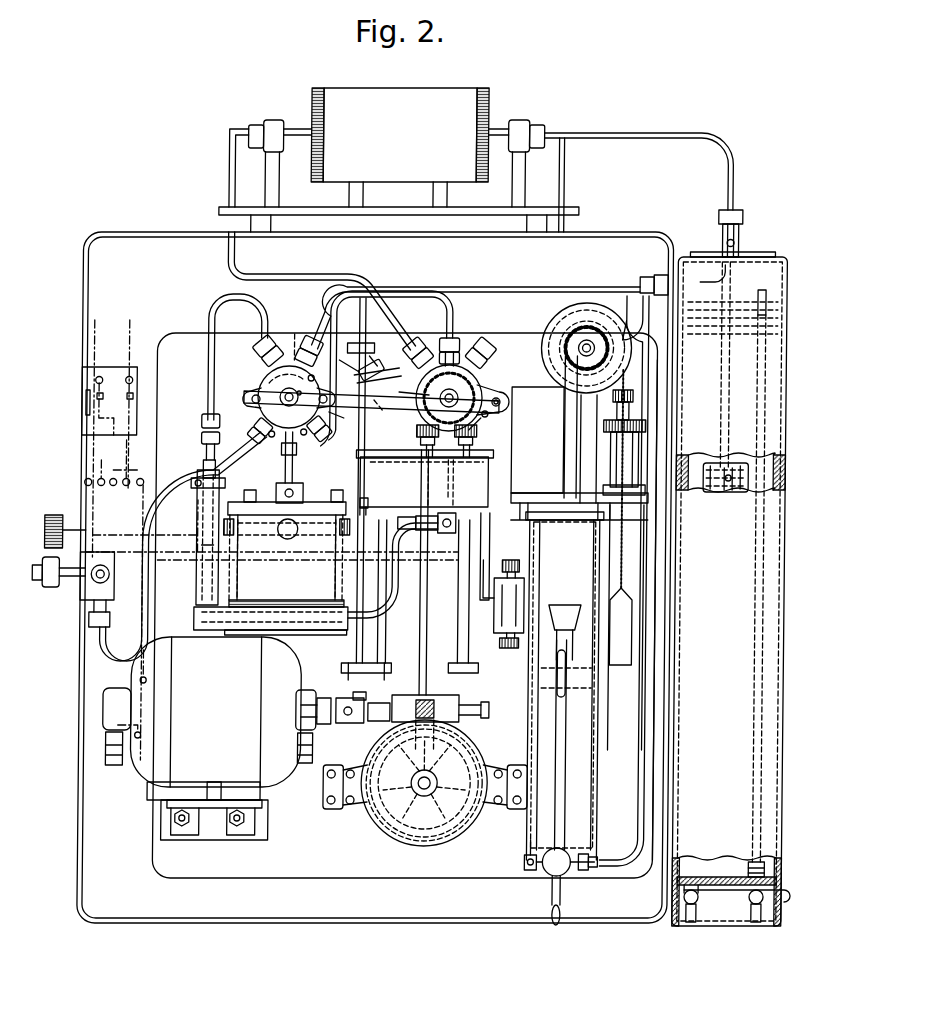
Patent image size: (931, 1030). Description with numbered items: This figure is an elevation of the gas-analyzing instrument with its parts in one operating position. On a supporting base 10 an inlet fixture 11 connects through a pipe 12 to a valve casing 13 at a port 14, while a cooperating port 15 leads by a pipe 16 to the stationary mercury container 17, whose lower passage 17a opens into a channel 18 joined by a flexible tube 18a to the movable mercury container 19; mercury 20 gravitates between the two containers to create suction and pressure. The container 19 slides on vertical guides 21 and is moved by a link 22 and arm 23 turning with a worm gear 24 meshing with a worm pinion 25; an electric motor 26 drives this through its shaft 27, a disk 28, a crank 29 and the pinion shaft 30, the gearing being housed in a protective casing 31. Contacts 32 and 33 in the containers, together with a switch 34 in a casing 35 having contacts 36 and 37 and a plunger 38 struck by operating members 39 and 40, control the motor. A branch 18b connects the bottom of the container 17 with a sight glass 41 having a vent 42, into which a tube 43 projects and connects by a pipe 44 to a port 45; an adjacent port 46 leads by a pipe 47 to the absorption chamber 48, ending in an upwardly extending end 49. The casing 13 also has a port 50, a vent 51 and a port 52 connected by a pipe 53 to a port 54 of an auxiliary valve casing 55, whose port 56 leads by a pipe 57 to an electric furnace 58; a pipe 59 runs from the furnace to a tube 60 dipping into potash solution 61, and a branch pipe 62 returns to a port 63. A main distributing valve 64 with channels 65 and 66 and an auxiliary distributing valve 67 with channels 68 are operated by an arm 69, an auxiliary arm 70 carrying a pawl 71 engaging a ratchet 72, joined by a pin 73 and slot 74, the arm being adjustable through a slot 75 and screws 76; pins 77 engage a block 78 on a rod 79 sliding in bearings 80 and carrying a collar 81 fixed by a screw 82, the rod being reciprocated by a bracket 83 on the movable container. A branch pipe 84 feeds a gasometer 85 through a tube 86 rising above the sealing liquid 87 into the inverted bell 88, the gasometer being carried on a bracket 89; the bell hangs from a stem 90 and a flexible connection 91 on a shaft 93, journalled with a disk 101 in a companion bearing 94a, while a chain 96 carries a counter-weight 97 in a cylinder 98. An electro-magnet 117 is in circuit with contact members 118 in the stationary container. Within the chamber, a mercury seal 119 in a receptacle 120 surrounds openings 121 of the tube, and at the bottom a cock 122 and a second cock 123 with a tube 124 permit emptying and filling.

The supporting base 10 is at (170, 245).
The inlet fixture 11 is at (53, 587).
The pipe 12 is at (200, 478).
The valve casing 13 is at (257, 388).
The port 14 is at (256, 420).
The port 15 is at (263, 441).
The pipe 16 is at (295, 476).
The stationary mercury container 17 is at (286, 557).
The passage 17a is at (290, 604).
The channel 18 is at (250, 635).
The flexible tube 18a is at (372, 616).
The branch 18b is at (197, 612).
The movable mercury container 19 is at (425, 478).
The mercury 20 is at (262, 515).
The vertical guides 21 is at (389, 645).
The link 22 is at (431, 632).
The arm 23 is at (424, 779).
The worm gear 24 is at (486, 748).
The worm pinion 25 is at (438, 700).
The electric motor 26 is at (209, 738).
The motor shaft 27 is at (330, 700).
The disk 28 is at (352, 724).
The crank 29 is at (372, 698).
The pinion shaft 30 is at (404, 705).
The protective casing 31 is at (470, 738).
The electrical contacts 32 is at (246, 525).
The electrical contacts 33 is at (455, 460).
The electric switch 34 is at (528, 594).
The protective casing 35 is at (500, 622).
The switch contact 36 is at (540, 608).
The switch contact 37 is at (497, 605).
The plunger 38 is at (524, 583).
The operating member 39 is at (492, 436).
The operating member 40 is at (497, 596).
The sight glass 41 is at (200, 588).
The vent 42 is at (193, 484).
The tube 43 is at (204, 567).
The pipe 44 is at (210, 367).
The port 45 is at (282, 381).
The port 46 is at (316, 352).
The pipe 47 is at (330, 299).
The absorption chamber 48 is at (787, 490).
The upwardly extending end 49 is at (712, 283).
The port 50 is at (306, 391).
The vent 51 is at (316, 376).
The port 52 is at (330, 430).
The pipe 53 is at (410, 294).
The port 54 is at (458, 342).
The auxiliary valve casing 55 is at (522, 400).
The port 56 is at (420, 346).
The pipe 57 is at (285, 276).
The electric furnace 58 is at (399, 160).
The pipe 59 is at (624, 136).
The tube 60 is at (724, 396).
The potash solution 61 is at (748, 298).
The branch pipe 62 is at (563, 190).
The port 63 is at (492, 363).
The main distributing valve 64 is at (265, 372).
The channel 65 is at (312, 440).
The channel 66 is at (292, 338).
The auxiliary distributing valve 67 is at (503, 406).
The channels 68 is at (500, 394).
The arm 69 is at (253, 398).
The auxiliary arm 70 is at (371, 402).
The pawl 71 is at (413, 390).
The ratchet 72 is at (482, 420).
The pin 73 is at (377, 375).
The slot 74 is at (381, 364).
The slot 75 is at (351, 358).
The screws 76 is at (338, 419).
The pins 77 is at (372, 382).
The block 78 is at (384, 411).
The rod 79 is at (360, 322).
The bearings 80 is at (368, 343).
The collar 81 is at (362, 506).
The screw 82 is at (368, 502).
The bracket 83 is at (418, 430).
The branch pipe 84 is at (642, 338).
The gasometer 85 is at (602, 781).
The tube 86 is at (560, 775).
The sealing liquid 87 is at (570, 670).
The inverted bell 88 is at (590, 555).
The supporting bracket 89 is at (554, 500).
The stem 90 is at (566, 448).
The flexible connection 91 is at (567, 372).
The shaft 93 is at (586, 346).
The companion bearing 94a is at (582, 348).
The chain 96 is at (624, 375).
The counter-weight 97 is at (624, 665).
The cylinder 98 is at (660, 723).
The disk 101 is at (592, 305).
The electro-magnet 117 is at (56, 531).
The contact members 118 is at (305, 515).
The mercury seal 119 is at (716, 467).
The receptacle 120 is at (716, 493).
The openings 121 is at (733, 476).
The cock 122 is at (700, 903).
The cock 123 is at (757, 901).
The tube 124 is at (754, 866).